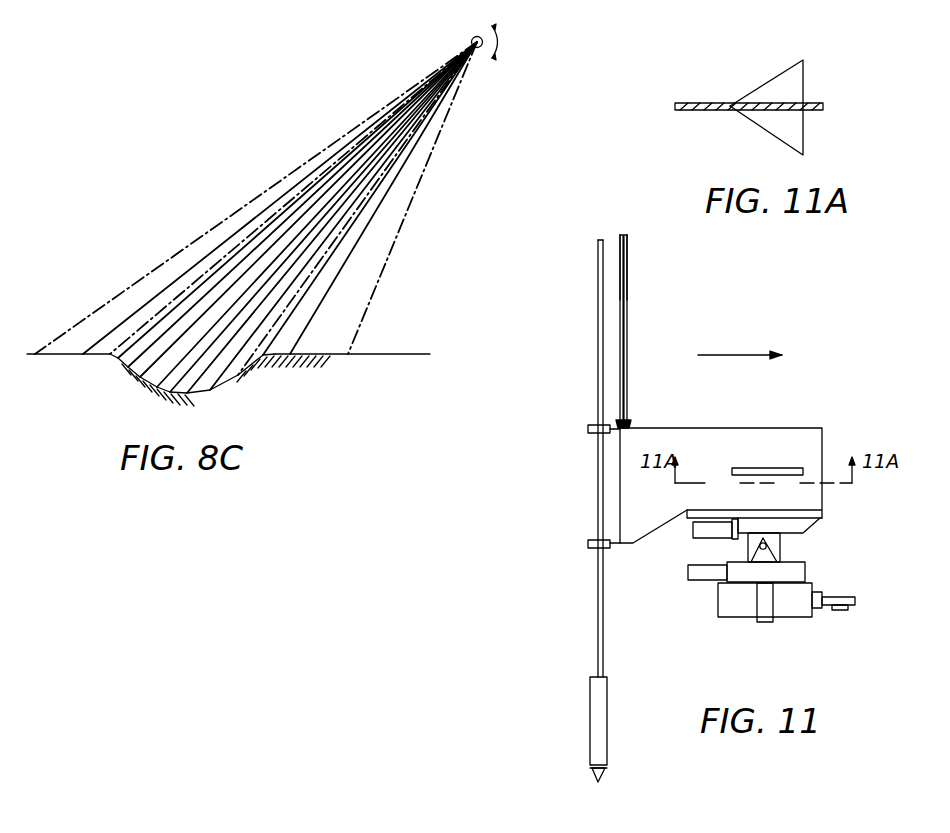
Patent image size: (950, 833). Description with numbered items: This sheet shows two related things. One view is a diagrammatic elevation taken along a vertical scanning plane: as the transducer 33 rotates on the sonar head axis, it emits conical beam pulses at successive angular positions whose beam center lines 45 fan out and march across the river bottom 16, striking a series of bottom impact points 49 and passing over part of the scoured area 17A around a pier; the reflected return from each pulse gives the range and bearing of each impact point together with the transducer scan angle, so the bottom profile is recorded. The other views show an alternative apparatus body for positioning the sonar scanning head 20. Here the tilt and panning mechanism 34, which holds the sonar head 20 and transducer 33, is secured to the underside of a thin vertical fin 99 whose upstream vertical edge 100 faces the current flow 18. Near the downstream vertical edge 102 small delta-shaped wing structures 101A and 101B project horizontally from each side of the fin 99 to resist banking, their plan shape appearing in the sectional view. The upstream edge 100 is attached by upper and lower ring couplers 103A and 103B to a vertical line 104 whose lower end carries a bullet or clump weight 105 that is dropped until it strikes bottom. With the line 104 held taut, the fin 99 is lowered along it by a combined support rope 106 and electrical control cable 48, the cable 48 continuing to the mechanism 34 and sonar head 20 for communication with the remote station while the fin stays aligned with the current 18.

In FIG. 8C, the transducer 33 is at (472, 36).
In FIG. 11, the transducer 33 is at (836, 611).
In FIG. 8C, the beam center lines 45 is at (293, 172).
In FIG. 8C, the bottom impact point 49 is at (35, 353).
In FIG. 8C, the river bottom 16 is at (410, 353).
In FIG. 8C, the scoured area 17A is at (202, 394).
In FIG. 11A, the fin 99 is at (710, 102).
In FIG. 11, the fin 99 is at (783, 447).
In FIG. 11A, the delta-shaped wing structure 101A is at (775, 125).
In FIG. 11, the delta-shaped wing structure 101A is at (757, 467).
In FIG. 11A, the delta-shaped wing structure 101B is at (779, 87).
In FIG. 11, the electrical control cable 48 is at (618, 245).
In FIG. 11, the support rope 106 is at (627, 326).
In FIG. 11, the current flow 18 is at (745, 354).
In FIG. 11, the upper ring coupler 103A is at (588, 429).
In FIG. 11, the lower ring coupler 103B is at (592, 548).
In FIG. 11, the upstream vertical edge 100 is at (620, 502).
In FIG. 11, the downstream vertical edge 102 is at (820, 513).
In FIG. 11, the tilt and panning mechanism 34 is at (812, 562).
In FIG. 11, the sonar scanning head 20 is at (783, 612).
In FIG. 11, the vertical line 104 is at (598, 640).
In FIG. 11, the bullet or clump weight 105 is at (607, 718).